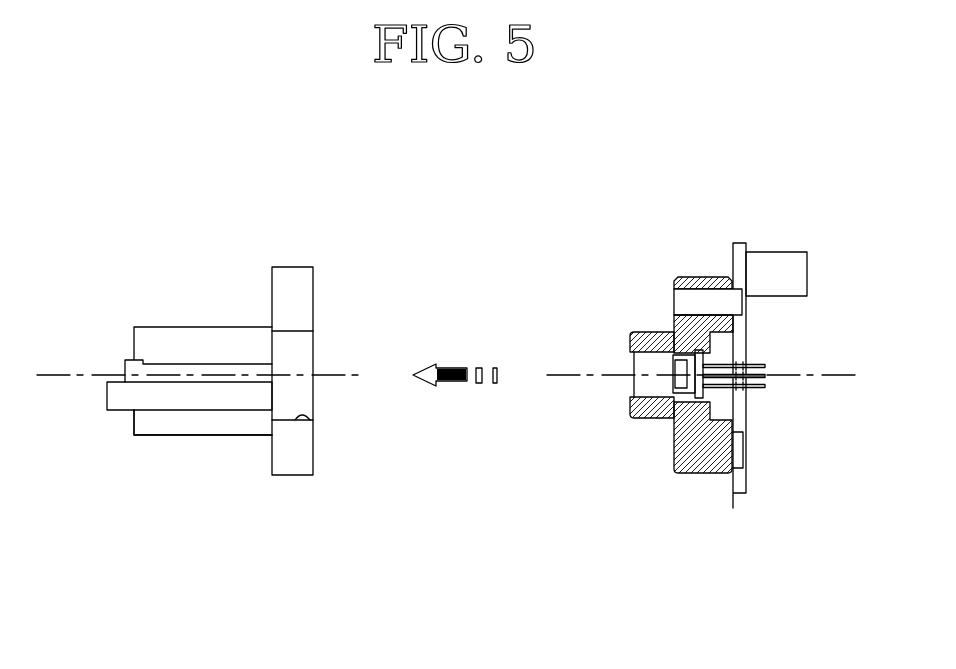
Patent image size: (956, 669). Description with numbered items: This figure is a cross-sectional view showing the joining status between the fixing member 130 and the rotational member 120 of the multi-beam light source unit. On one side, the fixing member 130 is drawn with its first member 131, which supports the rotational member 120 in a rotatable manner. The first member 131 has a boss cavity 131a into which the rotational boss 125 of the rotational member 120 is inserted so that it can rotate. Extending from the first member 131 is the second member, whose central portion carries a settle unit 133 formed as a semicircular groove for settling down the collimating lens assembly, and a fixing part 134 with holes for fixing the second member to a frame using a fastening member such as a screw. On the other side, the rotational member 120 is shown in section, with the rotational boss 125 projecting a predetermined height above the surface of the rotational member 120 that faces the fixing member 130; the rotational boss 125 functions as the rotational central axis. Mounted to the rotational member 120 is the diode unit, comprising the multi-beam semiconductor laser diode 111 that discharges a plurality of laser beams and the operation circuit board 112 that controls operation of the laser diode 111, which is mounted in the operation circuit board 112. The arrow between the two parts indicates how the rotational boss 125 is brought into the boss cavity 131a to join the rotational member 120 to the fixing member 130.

The fixing member 130 is at (215, 293).
The first member 131 is at (290, 265).
The boss cavity 131a is at (310, 420).
The settle unit 133 is at (198, 430).
The fixing part 134 is at (107, 393).
The operation circuit board 112 is at (762, 236).
The rotational member 120 is at (700, 245).
The rotational boss 125 is at (652, 331).
The multi-beam semiconductor laser diode 111 is at (686, 393).